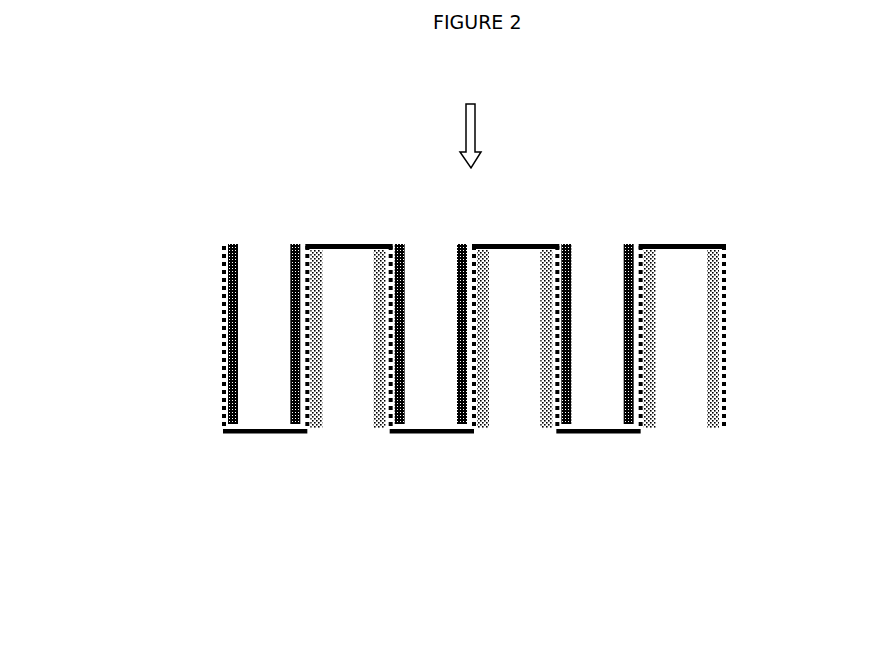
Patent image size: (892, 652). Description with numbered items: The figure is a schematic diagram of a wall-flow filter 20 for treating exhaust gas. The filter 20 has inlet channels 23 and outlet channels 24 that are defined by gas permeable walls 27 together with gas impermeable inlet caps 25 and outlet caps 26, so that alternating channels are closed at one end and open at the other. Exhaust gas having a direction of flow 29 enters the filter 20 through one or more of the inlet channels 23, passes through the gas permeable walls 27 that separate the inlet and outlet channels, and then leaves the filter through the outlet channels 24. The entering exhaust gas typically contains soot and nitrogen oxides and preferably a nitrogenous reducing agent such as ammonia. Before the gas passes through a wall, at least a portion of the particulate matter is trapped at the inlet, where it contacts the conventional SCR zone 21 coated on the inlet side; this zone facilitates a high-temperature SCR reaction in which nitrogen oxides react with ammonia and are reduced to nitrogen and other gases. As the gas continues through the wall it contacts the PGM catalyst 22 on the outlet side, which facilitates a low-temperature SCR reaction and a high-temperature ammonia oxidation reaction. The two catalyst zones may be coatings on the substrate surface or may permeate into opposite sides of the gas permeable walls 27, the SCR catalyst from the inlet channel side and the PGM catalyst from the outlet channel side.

The wall-flow filter 20 is at (166, 323).
The conventional SCR zone 21 is at (458, 258).
The PGM catalyst 22 is at (712, 413).
The inlet channels 23 is at (594, 278).
The outlet channels 24 is at (348, 397).
The inlet caps 25 is at (682, 245).
The outlet caps 26 is at (252, 432).
The gas permeable walls 27 is at (307, 373).
The direction of flow 29 is at (470, 130).